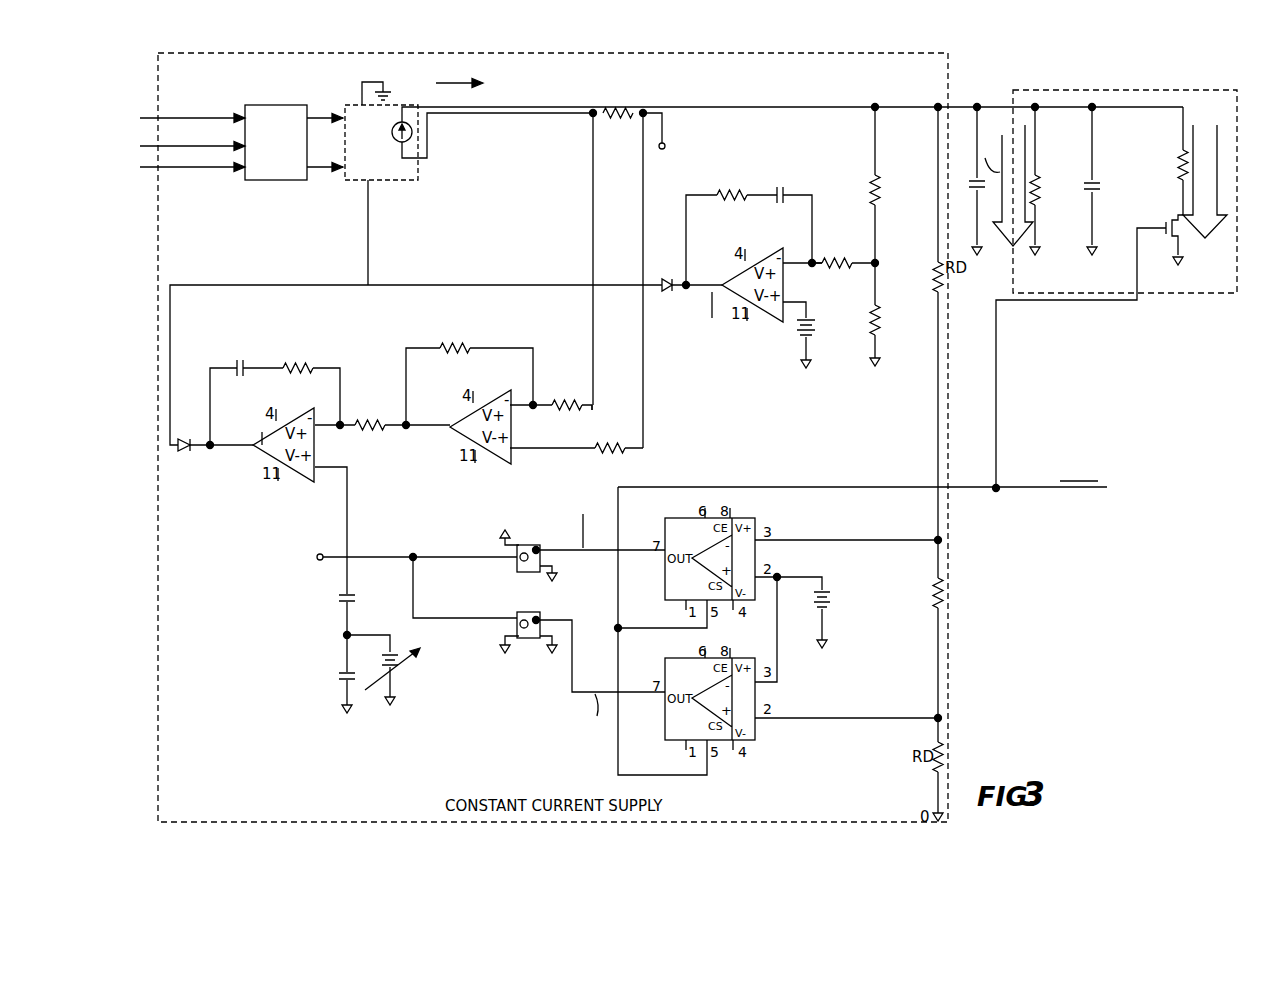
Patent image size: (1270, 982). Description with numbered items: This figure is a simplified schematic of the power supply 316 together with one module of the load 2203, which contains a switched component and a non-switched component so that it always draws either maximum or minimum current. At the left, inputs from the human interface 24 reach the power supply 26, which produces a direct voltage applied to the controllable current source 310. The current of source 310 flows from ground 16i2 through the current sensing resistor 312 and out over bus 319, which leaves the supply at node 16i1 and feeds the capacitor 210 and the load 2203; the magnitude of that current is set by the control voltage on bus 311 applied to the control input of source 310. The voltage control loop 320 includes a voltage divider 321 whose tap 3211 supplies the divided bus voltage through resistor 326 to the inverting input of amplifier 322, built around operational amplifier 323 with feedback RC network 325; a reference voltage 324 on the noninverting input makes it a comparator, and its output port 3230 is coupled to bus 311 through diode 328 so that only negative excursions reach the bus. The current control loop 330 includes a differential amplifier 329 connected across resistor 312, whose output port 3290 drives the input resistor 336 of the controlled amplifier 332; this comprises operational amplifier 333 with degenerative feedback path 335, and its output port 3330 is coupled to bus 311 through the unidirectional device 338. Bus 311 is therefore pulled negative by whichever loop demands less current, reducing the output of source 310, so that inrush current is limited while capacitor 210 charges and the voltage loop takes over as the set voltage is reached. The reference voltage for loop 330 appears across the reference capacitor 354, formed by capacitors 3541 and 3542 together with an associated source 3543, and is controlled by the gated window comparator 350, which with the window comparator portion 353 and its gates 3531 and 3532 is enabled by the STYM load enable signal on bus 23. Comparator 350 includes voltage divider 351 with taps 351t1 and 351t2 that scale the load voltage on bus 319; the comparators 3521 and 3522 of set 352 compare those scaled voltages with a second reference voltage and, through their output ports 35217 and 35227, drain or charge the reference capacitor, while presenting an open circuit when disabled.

The human interface 24 is at (201, 146).
The power supply 26 is at (300, 181).
The controllable current source 310 is at (390, 182).
The control bus 311 is at (490, 283).
The current sensing resistor 312 is at (618, 120).
The ground 16i2 is at (660, 155).
The bus 319 is at (745, 107).
The voltage control loop 320 is at (761, 169).
The amplifier 322 is at (758, 232).
The RC network 325 is at (780, 203).
The resistor 326 is at (856, 258).
The voltage divider 321 is at (925, 231).
The tap 3211 is at (876, 267).
The output port 3230 is at (717, 318).
The operational amplifier 323 is at (772, 318).
The reference voltage 324 is at (820, 330).
The diode 328 is at (676, 291).
The power supply 316 is at (946, 608).
The output terminal 16i1 is at (978, 105).
The capacitor 210 is at (975, 178).
The load module 2203 is at (1010, 278).
The current control loop 330 is at (321, 327).
The controlled amplifier 332 is at (283, 395).
The degenerative feedback path 335 is at (306, 372).
The output port 3330 is at (242, 423).
The operational amplifier 333 is at (272, 452).
The unidirectional current conducting device 338 is at (190, 450).
The input resistor 336 is at (384, 430).
The output port 3290 is at (407, 423).
The differential amplifier 329 is at (508, 378).
The reference capacitor 354 is at (280, 623).
The reference capacitor 3541 is at (355, 597).
The reference capacitor 3542 is at (340, 678).
The voltage source V2 3543 is at (410, 658).
The window comparator 353 is at (520, 503).
The gate G3 3531 is at (517, 557).
The gate G2 3532 is at (527, 640).
The gated window comparator 350 is at (820, 471).
The bus 23 is at (618, 597).
The comparator 3521 is at (665, 530).
The output port 35217 is at (665, 553).
The comparator 3522 is at (665, 670).
The output port 35227 is at (665, 694).
The set of comparators 352 is at (763, 647).
The voltage divider 351 is at (915, 653).
The tap 351t1 is at (936, 542).
The tap 351t2 is at (937, 716).